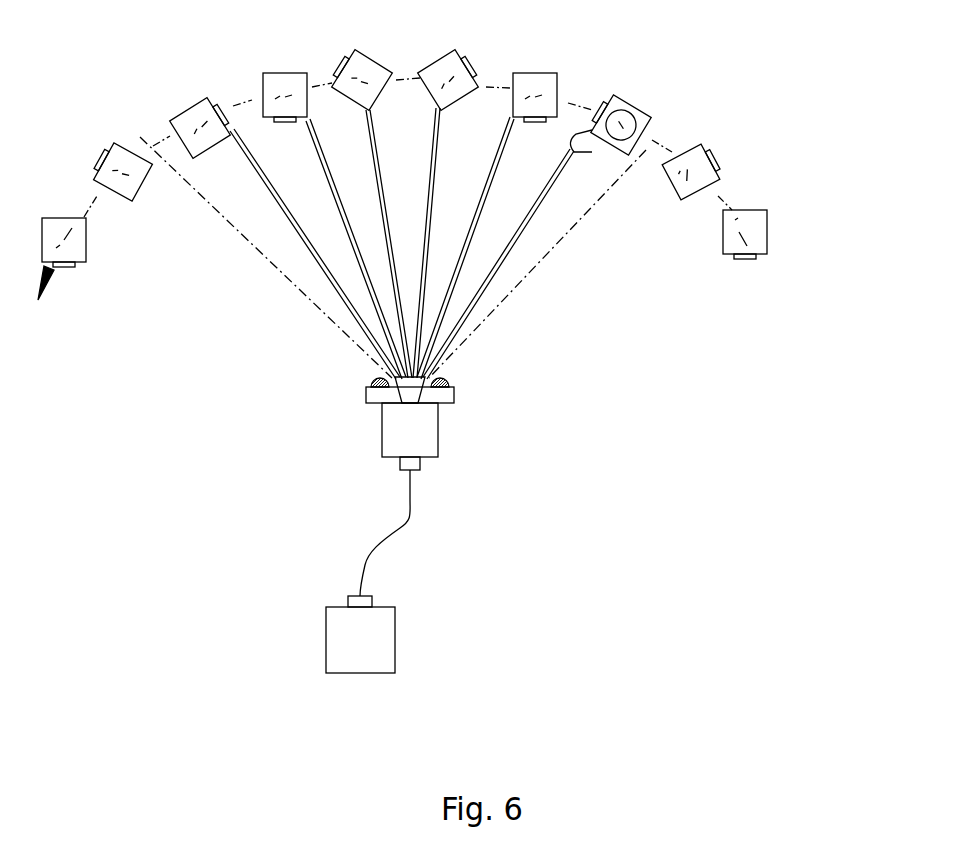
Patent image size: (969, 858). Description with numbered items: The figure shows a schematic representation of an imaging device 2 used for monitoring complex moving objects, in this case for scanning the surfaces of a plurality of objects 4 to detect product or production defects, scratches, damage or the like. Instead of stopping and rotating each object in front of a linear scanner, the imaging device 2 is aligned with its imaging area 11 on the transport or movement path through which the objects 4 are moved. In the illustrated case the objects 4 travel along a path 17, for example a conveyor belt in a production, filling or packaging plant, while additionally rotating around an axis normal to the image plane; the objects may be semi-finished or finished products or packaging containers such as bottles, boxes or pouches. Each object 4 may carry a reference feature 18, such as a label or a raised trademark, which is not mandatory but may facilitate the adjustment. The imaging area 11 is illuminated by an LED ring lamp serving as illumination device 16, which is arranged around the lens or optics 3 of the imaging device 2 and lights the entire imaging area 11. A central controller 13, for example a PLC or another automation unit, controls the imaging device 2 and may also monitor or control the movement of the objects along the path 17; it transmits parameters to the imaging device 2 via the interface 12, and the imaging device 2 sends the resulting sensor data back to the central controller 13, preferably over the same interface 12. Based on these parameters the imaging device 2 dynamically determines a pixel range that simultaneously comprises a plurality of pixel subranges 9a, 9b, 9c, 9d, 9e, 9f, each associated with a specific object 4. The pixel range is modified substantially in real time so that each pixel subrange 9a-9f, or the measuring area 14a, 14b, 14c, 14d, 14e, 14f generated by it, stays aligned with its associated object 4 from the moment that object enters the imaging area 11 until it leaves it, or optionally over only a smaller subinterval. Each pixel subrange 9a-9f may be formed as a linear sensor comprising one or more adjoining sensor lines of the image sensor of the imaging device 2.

The imaging device 2 is at (438, 440).
The lens or optics 3 is at (398, 392).
The object 4 is at (625, 97).
The pixel subrange 9a is at (533, 213).
The pixel subrange 9b is at (477, 218).
The pixel subrange 9c is at (432, 191).
The pixel subrange 9d is at (380, 185).
The pixel subrange 9e is at (327, 173).
The pixel subrange 9f is at (273, 191).
The imaging area 11 is at (238, 234).
The interface 12 is at (410, 517).
The central controller 13 is at (396, 656).
The measuring area 14a is at (617, 97).
The measuring area 14b is at (512, 112).
The measuring area 14c is at (441, 108).
The measuring area 14d is at (376, 106).
The measuring area 14e is at (307, 118).
The measuring area 14f is at (230, 130).
The illumination device 16 is at (455, 390).
The path 17 is at (770, 268).
The reference feature 18 is at (597, 103).